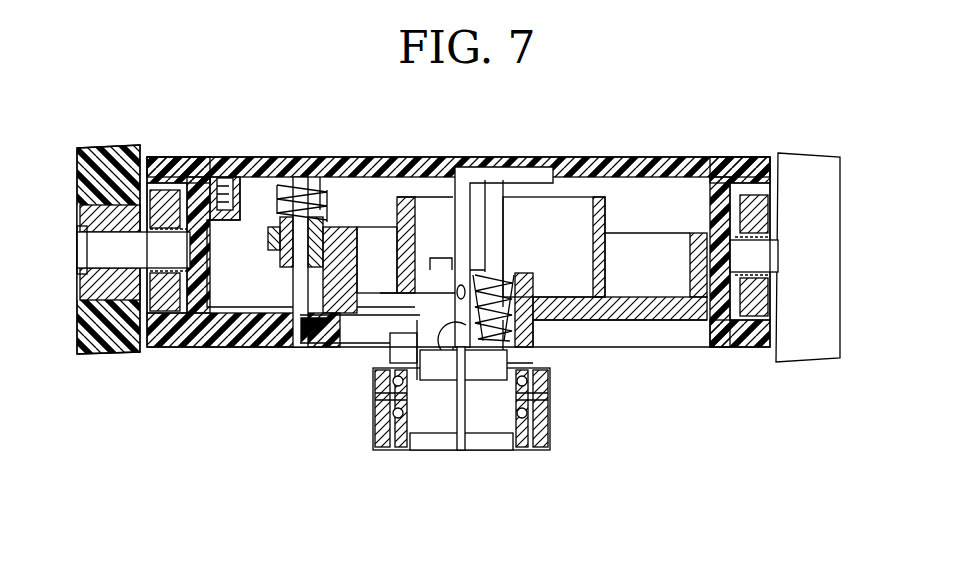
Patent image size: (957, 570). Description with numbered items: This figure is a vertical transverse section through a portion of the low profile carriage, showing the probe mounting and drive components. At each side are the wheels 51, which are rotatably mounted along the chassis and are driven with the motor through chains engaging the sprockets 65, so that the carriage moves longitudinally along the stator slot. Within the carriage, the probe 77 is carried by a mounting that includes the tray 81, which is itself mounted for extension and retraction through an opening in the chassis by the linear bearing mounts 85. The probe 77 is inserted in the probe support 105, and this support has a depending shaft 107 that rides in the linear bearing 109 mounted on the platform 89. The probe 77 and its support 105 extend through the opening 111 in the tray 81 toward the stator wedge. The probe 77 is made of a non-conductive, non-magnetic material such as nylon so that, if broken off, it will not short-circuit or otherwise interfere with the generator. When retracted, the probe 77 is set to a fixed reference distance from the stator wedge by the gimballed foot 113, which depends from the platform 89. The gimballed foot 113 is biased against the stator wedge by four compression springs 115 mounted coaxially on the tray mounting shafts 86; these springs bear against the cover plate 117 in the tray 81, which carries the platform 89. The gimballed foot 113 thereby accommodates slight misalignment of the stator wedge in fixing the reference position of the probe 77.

The wheels 51 is at (127, 160).
The sprockets 65 is at (152, 183).
The probe 77 is at (452, 415).
The tray 81 is at (650, 312).
The linear bearing mounts 85 is at (270, 249).
The tray mounting shafts 86 is at (298, 286).
The platform 89 is at (580, 292).
The probe support 105 is at (453, 207).
The depending shaft 107 is at (504, 217).
The linear bearing 109 is at (517, 290).
The opening 111 is at (382, 327).
The gimballed foot 113 is at (377, 423).
The compression springs 115 is at (320, 178).
The cover plate 117 is at (278, 176).